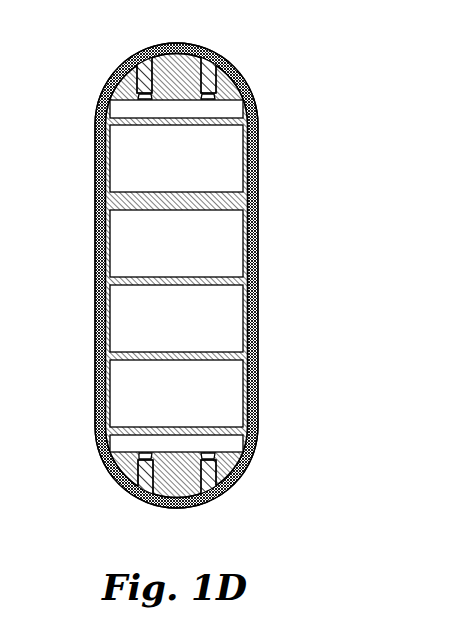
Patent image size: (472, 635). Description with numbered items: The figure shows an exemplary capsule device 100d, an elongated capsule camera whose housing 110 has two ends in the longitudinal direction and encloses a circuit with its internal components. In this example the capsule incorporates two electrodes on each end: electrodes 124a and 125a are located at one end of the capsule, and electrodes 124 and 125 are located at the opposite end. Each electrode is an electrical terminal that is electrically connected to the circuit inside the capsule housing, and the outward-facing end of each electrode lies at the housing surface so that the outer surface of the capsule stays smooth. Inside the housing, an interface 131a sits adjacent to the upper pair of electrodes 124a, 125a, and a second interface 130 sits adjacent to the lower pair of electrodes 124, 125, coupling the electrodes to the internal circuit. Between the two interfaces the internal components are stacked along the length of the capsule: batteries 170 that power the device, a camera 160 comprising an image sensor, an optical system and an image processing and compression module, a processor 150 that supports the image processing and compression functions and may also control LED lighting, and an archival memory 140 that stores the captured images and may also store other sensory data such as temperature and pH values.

The ingestible capsule device 100d is at (228, 46).
The capsule device 110 is at (176, 43).
The electrode 125a is at (138, 78).
The electrode 124a is at (215, 76).
The interface (top) 131a is at (243, 108).
The batteries 170 is at (243, 160).
The camera 160 is at (243, 243).
The processor 150 is at (243, 318).
The archival memory 140 is at (243, 396).
The interface (bottom) 130 is at (243, 443).
The electrode 125 is at (137, 477).
The electrode 124 is at (210, 478).